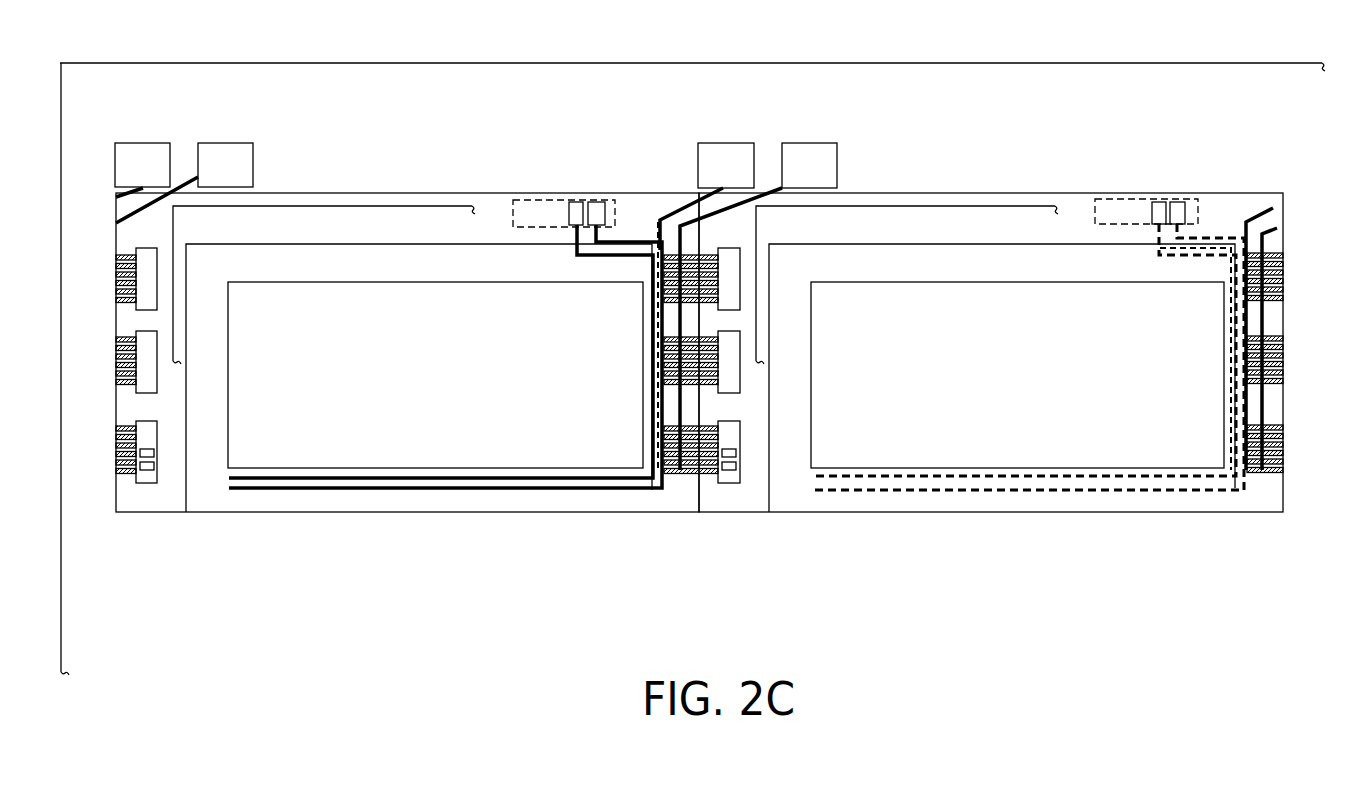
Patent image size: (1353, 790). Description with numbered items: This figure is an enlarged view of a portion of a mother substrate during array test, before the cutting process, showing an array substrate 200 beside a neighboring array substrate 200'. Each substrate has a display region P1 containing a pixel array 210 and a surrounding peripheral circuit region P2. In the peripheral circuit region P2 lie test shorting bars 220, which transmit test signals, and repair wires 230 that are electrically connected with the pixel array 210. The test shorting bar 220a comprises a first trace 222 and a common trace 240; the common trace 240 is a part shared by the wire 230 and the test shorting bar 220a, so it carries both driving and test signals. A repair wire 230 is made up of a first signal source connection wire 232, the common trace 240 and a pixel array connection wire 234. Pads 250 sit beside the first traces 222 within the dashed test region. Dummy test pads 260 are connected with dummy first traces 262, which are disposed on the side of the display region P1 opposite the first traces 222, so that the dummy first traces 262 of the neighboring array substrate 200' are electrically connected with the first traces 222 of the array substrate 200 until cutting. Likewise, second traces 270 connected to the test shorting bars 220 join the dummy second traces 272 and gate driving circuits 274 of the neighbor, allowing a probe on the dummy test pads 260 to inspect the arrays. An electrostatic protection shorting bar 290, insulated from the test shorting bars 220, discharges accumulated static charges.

The array substrate 200 is at (392, 417).
The neighboring array substrate 200' is at (1023, 417).
The pixel array 210 is at (520, 445).
The test shorting bars 220 is at (1319, 146).
The test shorting bar 220a is at (629, 143).
The first trace 222 is at (622, 238).
The wires 230 is at (1202, 260).
The first signal source connection wire 232 is at (1285, 270).
The pixel array connection wire 234 is at (1282, 410).
The common trace 240 is at (598, 212).
The pad 250 is at (1177, 202).
The dummy test pads 260 is at (225, 143).
The dummy first traces 262 is at (125, 191).
The second traces 270 is at (1284, 446).
The dummy second traces 272 is at (116, 340).
The gate driving circuits 274 is at (137, 257).
The electrostatic protection shorting bar 290 is at (466, 200).
The display region P1 is at (444, 450).
The peripheral circuit region P2 is at (495, 200).